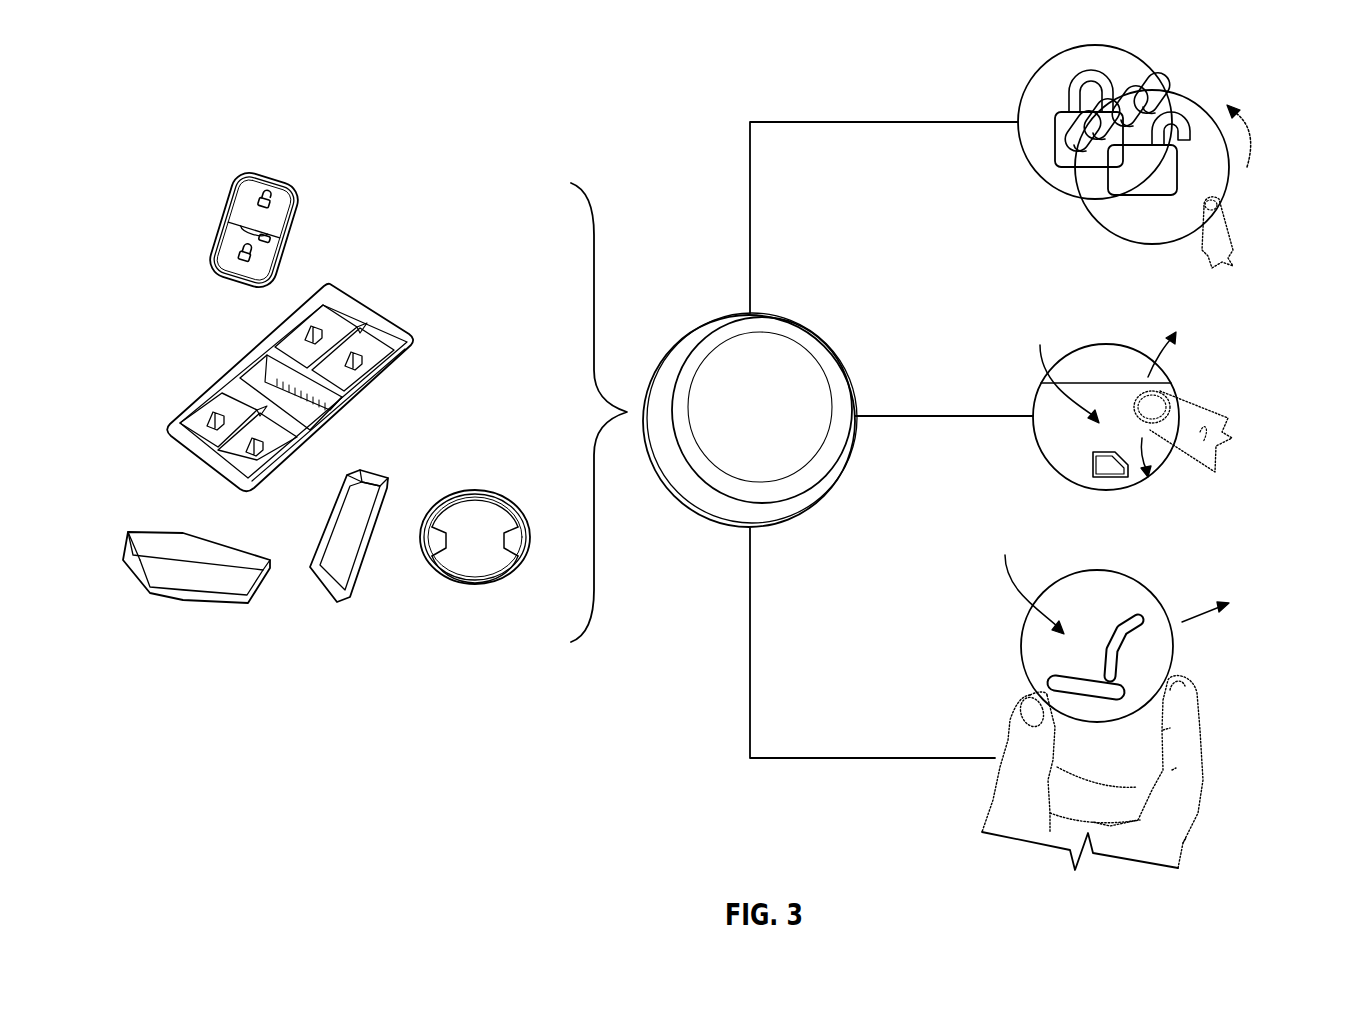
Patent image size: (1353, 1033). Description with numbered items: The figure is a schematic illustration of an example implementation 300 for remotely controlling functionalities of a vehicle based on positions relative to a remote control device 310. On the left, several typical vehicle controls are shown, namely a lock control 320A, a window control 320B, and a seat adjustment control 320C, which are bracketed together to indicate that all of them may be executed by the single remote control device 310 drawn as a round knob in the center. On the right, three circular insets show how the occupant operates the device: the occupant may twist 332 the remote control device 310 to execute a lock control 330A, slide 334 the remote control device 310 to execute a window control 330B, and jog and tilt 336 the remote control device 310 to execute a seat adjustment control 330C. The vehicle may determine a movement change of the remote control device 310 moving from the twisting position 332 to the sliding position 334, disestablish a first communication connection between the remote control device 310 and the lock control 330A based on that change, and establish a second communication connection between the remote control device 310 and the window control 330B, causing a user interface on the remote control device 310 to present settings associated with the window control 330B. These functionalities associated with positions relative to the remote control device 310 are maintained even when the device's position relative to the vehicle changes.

The example implementation 300 is at (337, 91).
The remote control device 310 is at (745, 498).
The lock control 320A is at (228, 197).
The window control 320B is at (198, 402).
The seat adjustment control 320C is at (155, 522).
The lock control 330A is at (1233, 197).
The window control 330B is at (1110, 490).
The seat adjustment control 330C is at (1095, 570).
The twisting position 332 is at (1248, 137).
The sliding position 334 is at (1163, 350).
The jog and tilt 336 is at (1200, 615).